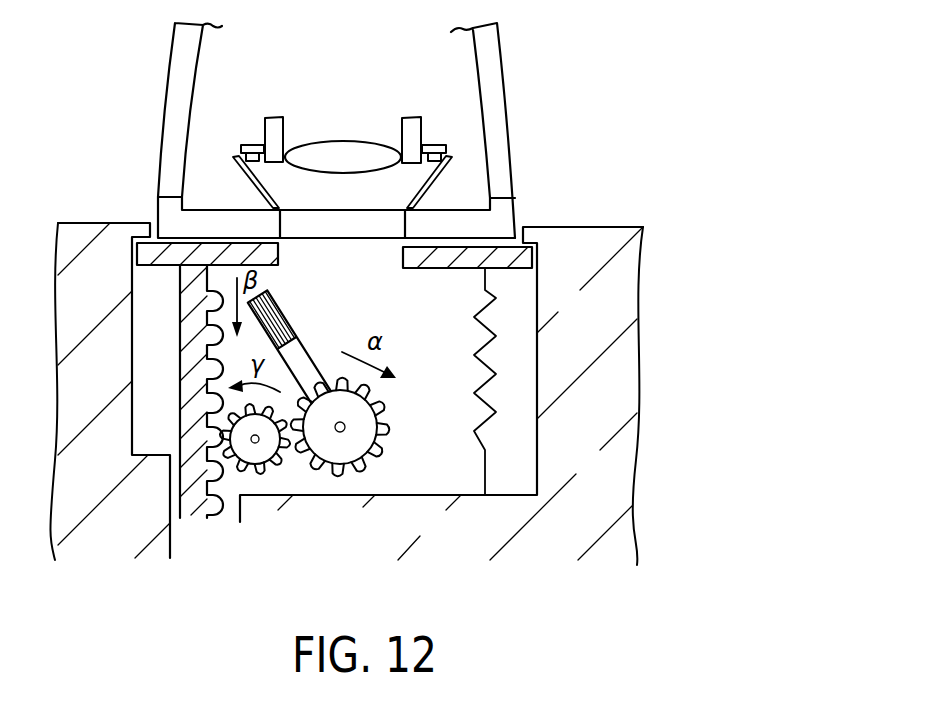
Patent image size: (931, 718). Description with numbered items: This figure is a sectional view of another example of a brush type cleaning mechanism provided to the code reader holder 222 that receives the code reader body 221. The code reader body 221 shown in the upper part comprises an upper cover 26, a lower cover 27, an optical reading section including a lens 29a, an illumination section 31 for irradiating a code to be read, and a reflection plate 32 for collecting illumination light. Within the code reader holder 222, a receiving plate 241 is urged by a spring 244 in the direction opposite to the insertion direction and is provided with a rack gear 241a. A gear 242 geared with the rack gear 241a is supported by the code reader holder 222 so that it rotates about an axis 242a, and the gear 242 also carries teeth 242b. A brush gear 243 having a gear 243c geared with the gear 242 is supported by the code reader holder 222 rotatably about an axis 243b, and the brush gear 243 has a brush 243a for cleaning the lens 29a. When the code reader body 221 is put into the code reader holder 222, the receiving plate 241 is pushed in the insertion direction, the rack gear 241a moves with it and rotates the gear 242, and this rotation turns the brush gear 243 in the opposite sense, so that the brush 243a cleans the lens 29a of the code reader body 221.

The code reader body 221 is at (380, 119).
The code reader holder 222 is at (620, 312).
The upper cover 26 is at (488, 98).
The lower cover 27 is at (505, 222).
The lens 29a is at (335, 140).
The illumination section 31 is at (246, 143).
The reflection plate 32 is at (448, 178).
The receiving plate 241 is at (137, 266).
The rack gear 241a is at (222, 505).
The gear 242 is at (252, 457).
The axis 242a is at (251, 440).
The pinion teeth 242b is at (283, 462).
The brush gear 243 is at (360, 458).
The brush 243a is at (290, 320).
The axis of brush gear 243b is at (346, 430).
The gear of brush gear 243c is at (372, 393).
The spring 244 is at (488, 440).